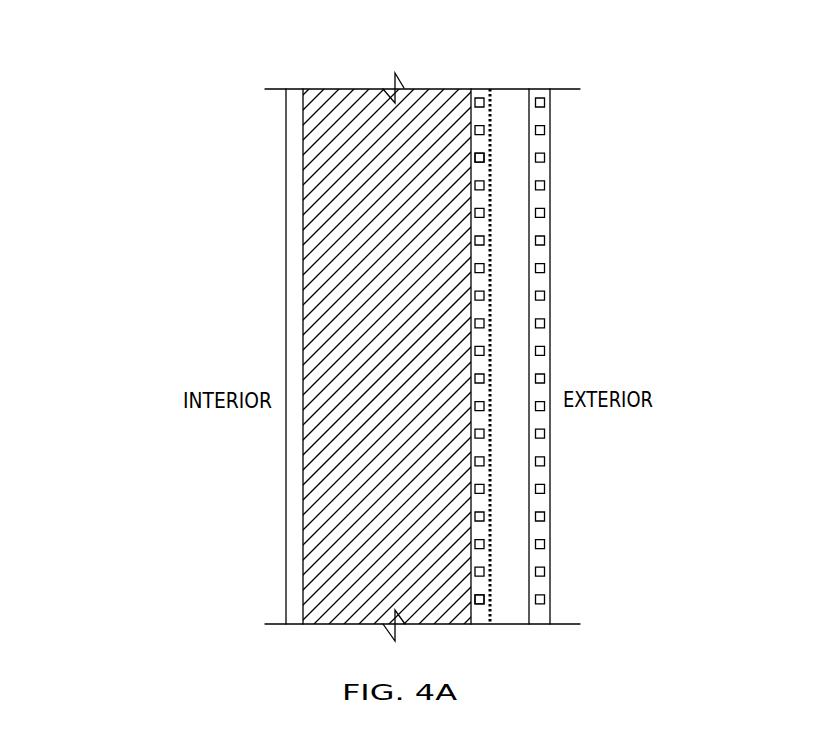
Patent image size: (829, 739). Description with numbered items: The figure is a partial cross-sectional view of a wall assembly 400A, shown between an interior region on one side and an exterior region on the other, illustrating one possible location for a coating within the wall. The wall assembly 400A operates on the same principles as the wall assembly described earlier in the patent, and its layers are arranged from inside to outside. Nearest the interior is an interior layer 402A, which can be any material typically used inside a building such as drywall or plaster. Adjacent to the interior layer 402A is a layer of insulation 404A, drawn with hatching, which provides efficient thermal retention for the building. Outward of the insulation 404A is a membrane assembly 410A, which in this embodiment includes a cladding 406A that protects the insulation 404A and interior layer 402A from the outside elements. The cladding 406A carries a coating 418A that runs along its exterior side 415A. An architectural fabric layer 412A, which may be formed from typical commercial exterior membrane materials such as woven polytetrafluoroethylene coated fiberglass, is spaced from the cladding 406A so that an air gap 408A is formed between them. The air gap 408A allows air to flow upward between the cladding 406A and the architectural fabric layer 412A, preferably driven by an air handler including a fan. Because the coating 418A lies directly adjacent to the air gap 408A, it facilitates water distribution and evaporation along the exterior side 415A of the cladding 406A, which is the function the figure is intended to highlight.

The wall assembly 400A is at (162, 229).
The interior layer 402A is at (287, 303).
The insulation 404A is at (317, 575).
The cladding 406A is at (480, 614).
The air gap 408A is at (512, 511).
The membrane assembly 410A is at (481, 116).
The architectural fabric layer 412A is at (538, 142).
The exterior side of the cladding 415A is at (490, 135).
The coating 418A is at (493, 314).